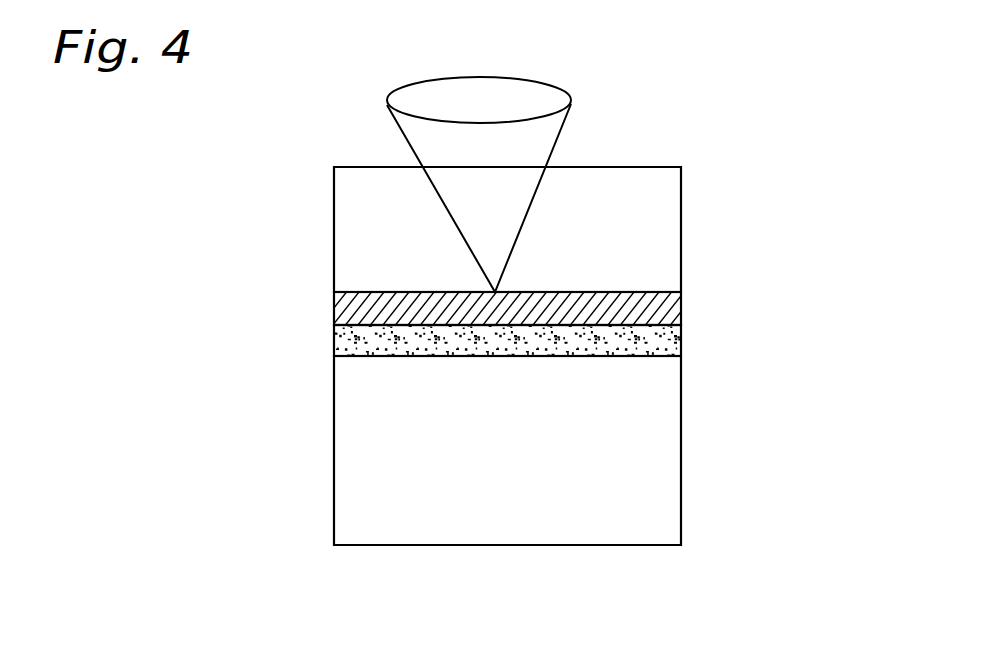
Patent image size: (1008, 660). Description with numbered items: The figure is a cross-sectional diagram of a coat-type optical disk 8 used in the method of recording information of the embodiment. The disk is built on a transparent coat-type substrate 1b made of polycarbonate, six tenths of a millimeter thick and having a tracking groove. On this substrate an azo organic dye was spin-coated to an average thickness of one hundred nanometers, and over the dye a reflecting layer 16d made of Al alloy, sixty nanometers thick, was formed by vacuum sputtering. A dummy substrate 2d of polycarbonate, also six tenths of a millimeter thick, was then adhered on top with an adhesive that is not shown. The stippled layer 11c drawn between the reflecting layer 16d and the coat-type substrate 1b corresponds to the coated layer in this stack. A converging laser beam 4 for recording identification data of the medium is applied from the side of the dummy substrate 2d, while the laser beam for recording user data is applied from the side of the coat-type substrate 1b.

The laser beam 4 is at (543, 135).
The dummy substrate 2d is at (507, 229).
The reflecting layer 16d is at (658, 307).
The reflective layer 11c is at (660, 342).
The coat-type substrate 1b is at (507, 450).
The coat-type optical disk 8 is at (585, 356).